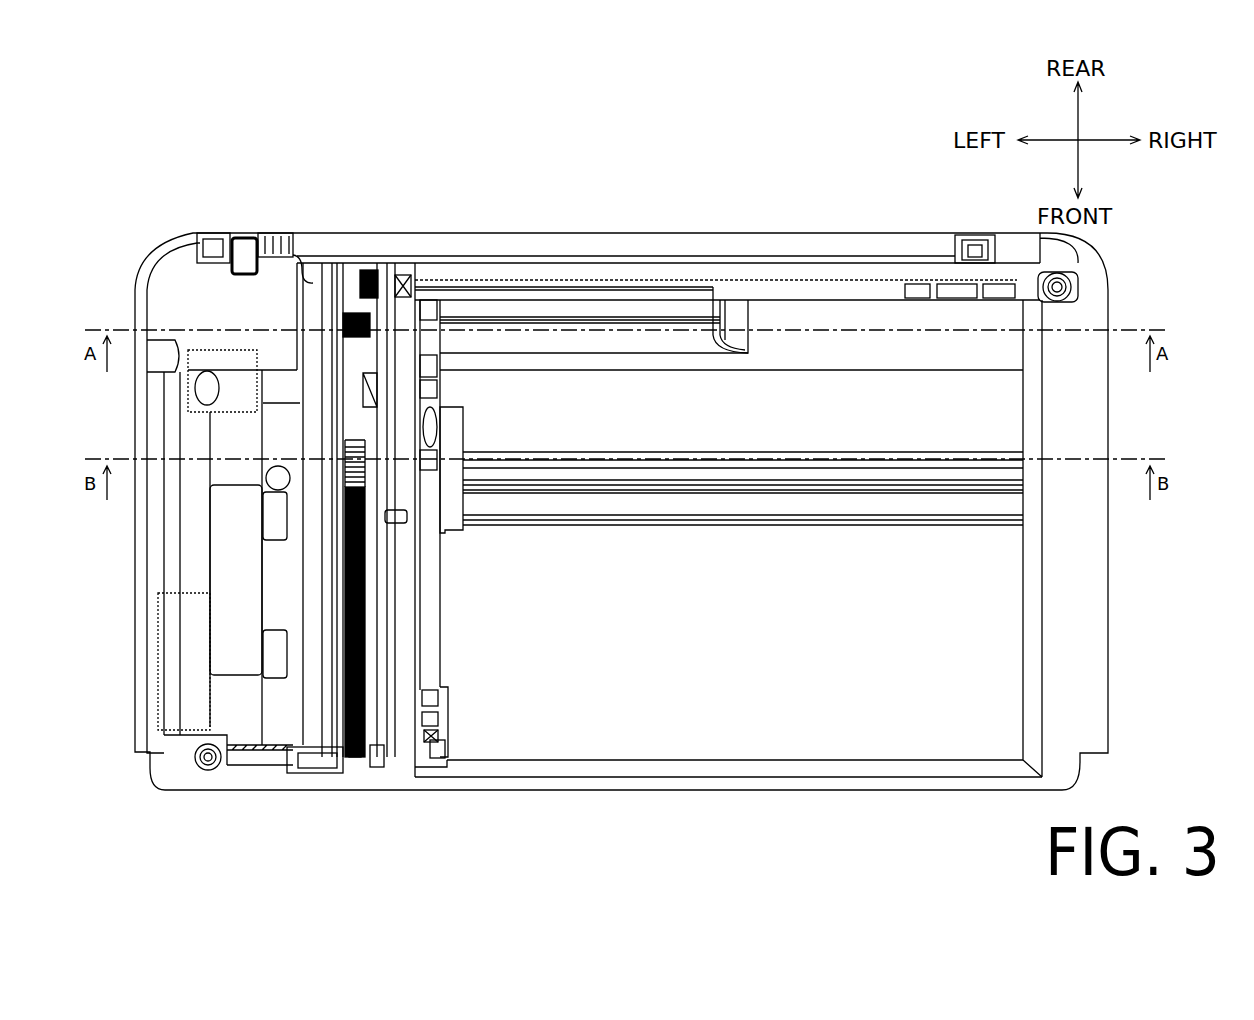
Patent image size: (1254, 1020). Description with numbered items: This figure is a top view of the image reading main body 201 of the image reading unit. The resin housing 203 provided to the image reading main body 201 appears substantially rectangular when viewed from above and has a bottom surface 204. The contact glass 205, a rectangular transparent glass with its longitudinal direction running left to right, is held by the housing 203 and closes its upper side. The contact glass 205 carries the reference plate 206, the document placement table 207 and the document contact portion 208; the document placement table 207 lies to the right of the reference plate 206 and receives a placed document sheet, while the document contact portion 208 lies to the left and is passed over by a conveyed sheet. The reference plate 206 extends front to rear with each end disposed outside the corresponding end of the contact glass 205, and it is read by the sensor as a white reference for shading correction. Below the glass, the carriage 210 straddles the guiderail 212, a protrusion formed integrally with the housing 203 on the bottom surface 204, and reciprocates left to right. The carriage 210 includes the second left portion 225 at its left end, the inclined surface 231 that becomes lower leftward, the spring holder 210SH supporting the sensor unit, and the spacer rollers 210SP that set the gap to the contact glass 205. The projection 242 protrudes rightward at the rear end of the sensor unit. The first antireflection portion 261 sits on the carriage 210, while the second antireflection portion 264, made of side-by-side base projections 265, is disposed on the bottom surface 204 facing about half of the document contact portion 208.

The image reading main body 201 is at (976, 810).
The housing 203 is at (527, 770).
The bottom surface 204 is at (1000, 612).
The contact glass 205 is at (995, 420).
The reference plate 206 is at (404, 276).
The document placement table 207 is at (788, 318).
The document contact portion 208 is at (350, 258).
The carriage 210 is at (464, 423).
The spring holder 210SH is at (450, 710).
The spacer rollers 210SP is at (437, 748).
The guiderail 212 is at (716, 490).
The second left portion 225 is at (345, 548).
The inclined surface 231 is at (365, 578).
The projection 242 is at (435, 298).
The first antireflection portion 261 is at (378, 272).
The second antireflection portion 264 is at (382, 631).
The base projections 265 is at (365, 603).